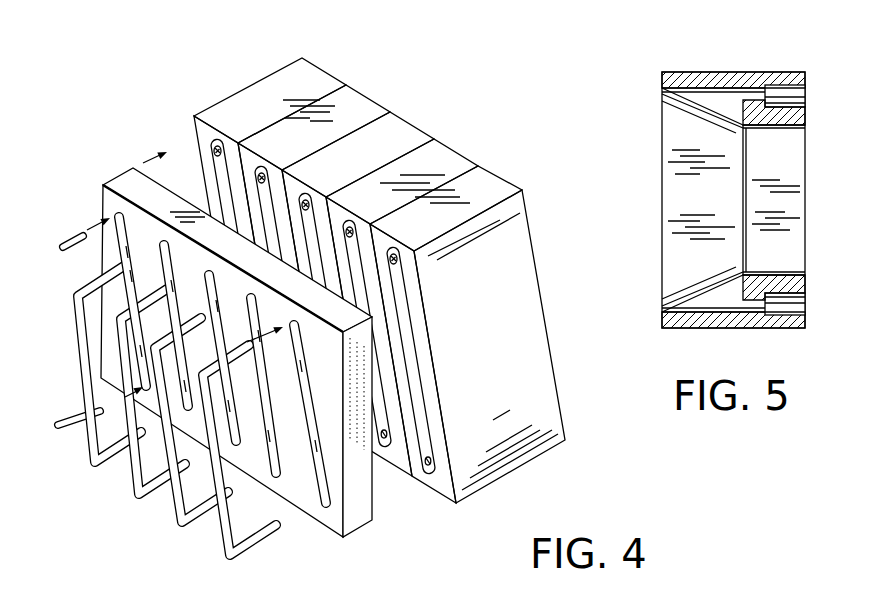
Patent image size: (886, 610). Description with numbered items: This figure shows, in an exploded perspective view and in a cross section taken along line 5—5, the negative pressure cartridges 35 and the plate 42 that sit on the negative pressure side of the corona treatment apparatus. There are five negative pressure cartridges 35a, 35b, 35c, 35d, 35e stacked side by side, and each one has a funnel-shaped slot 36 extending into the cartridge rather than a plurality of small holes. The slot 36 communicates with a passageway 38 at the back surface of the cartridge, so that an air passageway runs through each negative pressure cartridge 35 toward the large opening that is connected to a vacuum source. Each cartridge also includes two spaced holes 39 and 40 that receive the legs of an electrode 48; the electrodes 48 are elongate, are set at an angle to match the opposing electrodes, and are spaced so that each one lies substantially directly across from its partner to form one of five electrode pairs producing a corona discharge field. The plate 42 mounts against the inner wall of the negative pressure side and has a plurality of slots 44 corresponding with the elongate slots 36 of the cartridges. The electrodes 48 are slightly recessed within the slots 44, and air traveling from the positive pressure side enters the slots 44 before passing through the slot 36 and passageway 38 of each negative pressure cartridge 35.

In FIG. 4, the section line 5— 5 is at (348, 60).
In FIG. 5, the negative pressure cartridge 35 is at (745, 72).
In FIG. 4, the negative pressure cartridge 35a is at (500, 182).
In FIG. 4, the negative pressure cartridge 35b is at (457, 157).
In FIG. 4, the negative pressure cartridge 35c is at (413, 133).
In FIG. 4, the negative pressure cartridge 35d is at (370, 107).
In FIG. 4, the negative pressure cartridge 35e is at (337, 83).
In FIG. 4, the funnel-shaped slot 36 is at (405, 332).
In FIG. 5, the funnel-shaped slot 36 is at (675, 228).
In FIG. 5, the passageway 38 is at (793, 237).
In FIG. 4, the hole 39 is at (258, 168).
In FIG. 5, the hole 39 is at (690, 100).
In FIG. 4, the hole 40 is at (400, 505).
In FIG. 5, the hole 40 is at (700, 303).
In FIG. 4, the plate 42 is at (122, 182).
In FIG. 4, the slot 44 is at (311, 506).
In FIG. 4, the electrode 48 is at (88, 452).